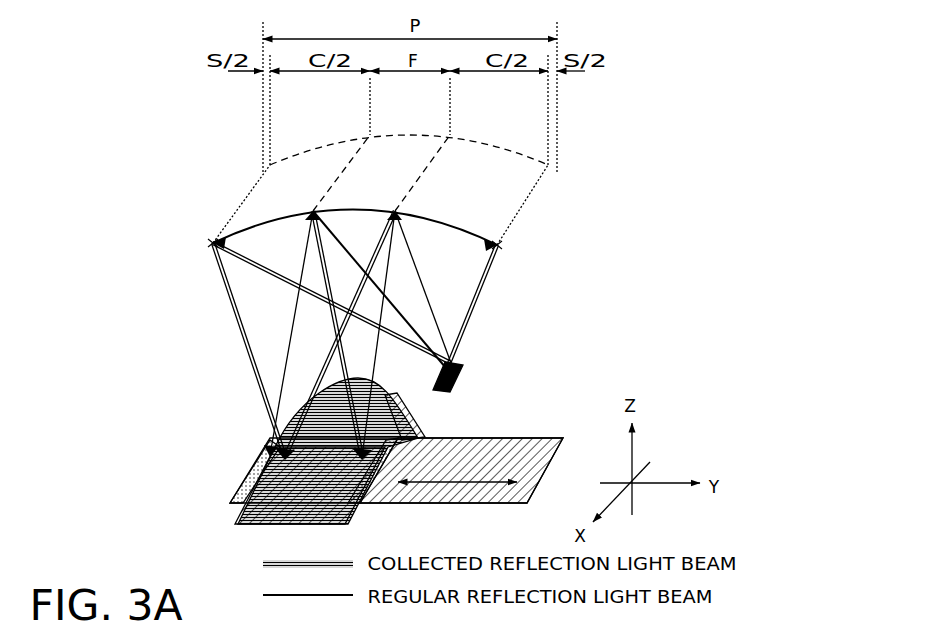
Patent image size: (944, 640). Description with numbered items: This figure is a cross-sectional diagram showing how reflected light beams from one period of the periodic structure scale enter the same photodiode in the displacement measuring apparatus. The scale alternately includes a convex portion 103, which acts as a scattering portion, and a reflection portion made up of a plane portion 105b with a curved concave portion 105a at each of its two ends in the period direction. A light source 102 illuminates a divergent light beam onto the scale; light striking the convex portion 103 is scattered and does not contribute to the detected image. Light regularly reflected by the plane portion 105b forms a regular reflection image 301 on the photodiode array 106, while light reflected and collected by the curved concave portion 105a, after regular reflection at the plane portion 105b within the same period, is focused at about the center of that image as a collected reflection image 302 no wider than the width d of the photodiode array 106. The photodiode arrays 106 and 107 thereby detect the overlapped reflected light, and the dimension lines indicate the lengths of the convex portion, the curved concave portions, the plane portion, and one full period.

The light source 102 is at (463, 366).
The convex portion 103 is at (235, 208).
The curved concave portion 105a is at (305, 153).
The plane portion 105b is at (378, 153).
The photodiode array 106 is at (413, 437).
The photodiode array 107 is at (498, 438).
The regular reflection image 301 is at (360, 505).
The collected reflection image 302 is at (300, 503).